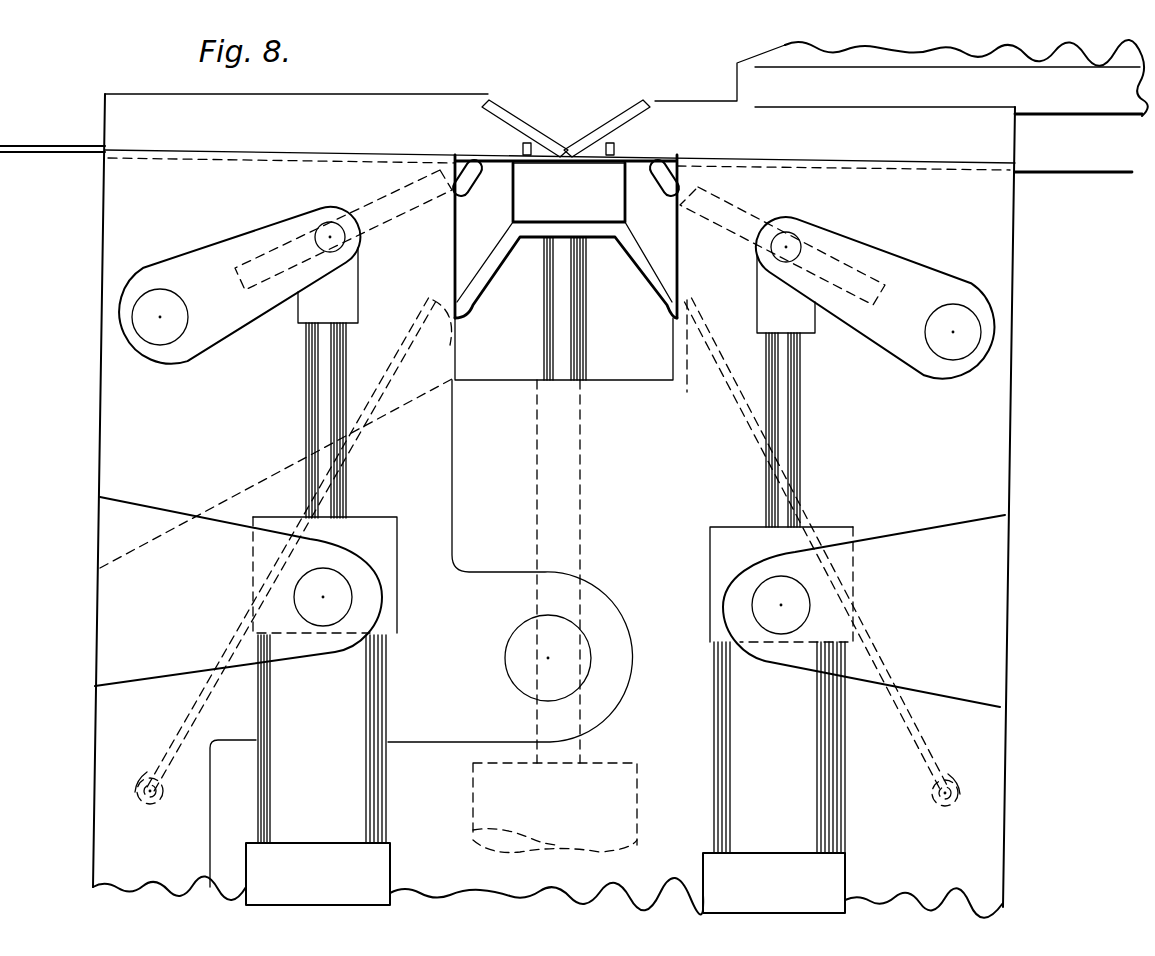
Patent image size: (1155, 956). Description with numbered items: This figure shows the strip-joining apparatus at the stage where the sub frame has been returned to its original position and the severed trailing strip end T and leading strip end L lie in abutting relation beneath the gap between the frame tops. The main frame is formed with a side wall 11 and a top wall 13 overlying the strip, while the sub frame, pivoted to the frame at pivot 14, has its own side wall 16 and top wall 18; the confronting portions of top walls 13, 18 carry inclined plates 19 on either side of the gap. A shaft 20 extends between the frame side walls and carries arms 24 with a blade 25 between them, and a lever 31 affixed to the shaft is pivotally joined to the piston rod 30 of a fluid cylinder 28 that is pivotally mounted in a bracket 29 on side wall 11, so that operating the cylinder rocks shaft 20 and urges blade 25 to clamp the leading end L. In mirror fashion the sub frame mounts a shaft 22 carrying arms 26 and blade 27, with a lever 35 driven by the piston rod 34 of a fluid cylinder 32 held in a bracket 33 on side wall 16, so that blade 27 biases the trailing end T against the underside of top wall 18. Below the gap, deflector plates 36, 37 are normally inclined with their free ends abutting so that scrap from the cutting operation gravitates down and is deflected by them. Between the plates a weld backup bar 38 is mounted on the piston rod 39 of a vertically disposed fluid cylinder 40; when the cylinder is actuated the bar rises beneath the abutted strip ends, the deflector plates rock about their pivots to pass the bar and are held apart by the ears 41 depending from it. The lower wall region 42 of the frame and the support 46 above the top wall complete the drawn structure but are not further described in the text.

The side wall 11 is at (985, 398).
The top wall 13 is at (988, 150).
The pivot 14 is at (626, 614).
The side wall 16 is at (105, 422).
The top wall 18 is at (368, 110).
The inclined plates 19 is at (524, 106).
The shaft 20 is at (972, 332).
The shaft 22 is at (148, 318).
The arms 24 is at (760, 202).
The blade 25 is at (660, 195).
The arms 26 is at (378, 197).
The blade 27 is at (470, 195).
The fluid cylinder 28 is at (815, 795).
The bracket 29 is at (995, 632).
The piston rod 30 is at (790, 437).
The lever 31 is at (915, 265).
The fluid cylinder 32 is at (386, 692).
The bracket 33 is at (103, 530).
The piston rod 34 is at (318, 398).
The lever 35 is at (203, 250).
The deflector plate 36 is at (718, 318).
The deflector plate 37 is at (420, 318).
The weld backup bar 38 is at (555, 208).
The piston rod 39 is at (568, 347).
The fluid cylinder 40 is at (622, 803).
The ears 41 is at (448, 349).
The bottom wall 42 is at (105, 865).
The support 46 is at (1125, 102).
The trailing end T is at (45, 157).
The leading strip end L is at (1080, 180).